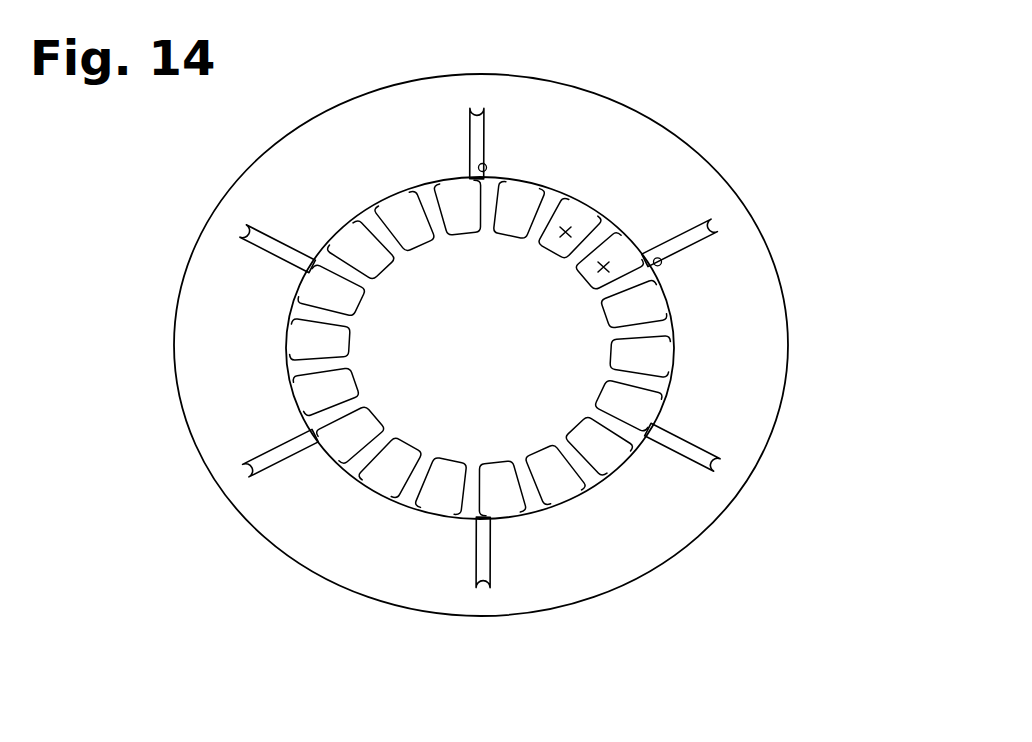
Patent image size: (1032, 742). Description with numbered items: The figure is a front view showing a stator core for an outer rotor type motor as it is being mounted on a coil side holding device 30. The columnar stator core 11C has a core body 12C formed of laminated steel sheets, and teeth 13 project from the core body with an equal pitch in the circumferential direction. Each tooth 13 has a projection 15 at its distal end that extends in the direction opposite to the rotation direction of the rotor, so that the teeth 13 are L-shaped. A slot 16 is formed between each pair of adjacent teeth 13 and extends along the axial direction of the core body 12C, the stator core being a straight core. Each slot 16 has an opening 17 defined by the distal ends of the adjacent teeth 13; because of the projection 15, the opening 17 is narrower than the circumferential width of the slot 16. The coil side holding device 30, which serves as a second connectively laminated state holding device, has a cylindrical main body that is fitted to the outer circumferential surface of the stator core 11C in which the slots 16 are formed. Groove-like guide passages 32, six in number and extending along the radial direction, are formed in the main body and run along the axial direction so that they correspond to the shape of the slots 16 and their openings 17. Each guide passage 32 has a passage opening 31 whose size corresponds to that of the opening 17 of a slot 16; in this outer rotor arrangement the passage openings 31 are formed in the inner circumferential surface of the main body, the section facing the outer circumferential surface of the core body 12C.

The stator core 11C is at (465, 367).
The core body 12C is at (480, 349).
The tooth 13 is at (410, 236).
The projection 15 is at (454, 183).
The slot 16 is at (572, 287).
The opening 17 is at (603, 221).
The coil side holding device 30 is at (758, 257).
The passage opening 31 is at (487, 166).
The guide passage 32 is at (487, 126).